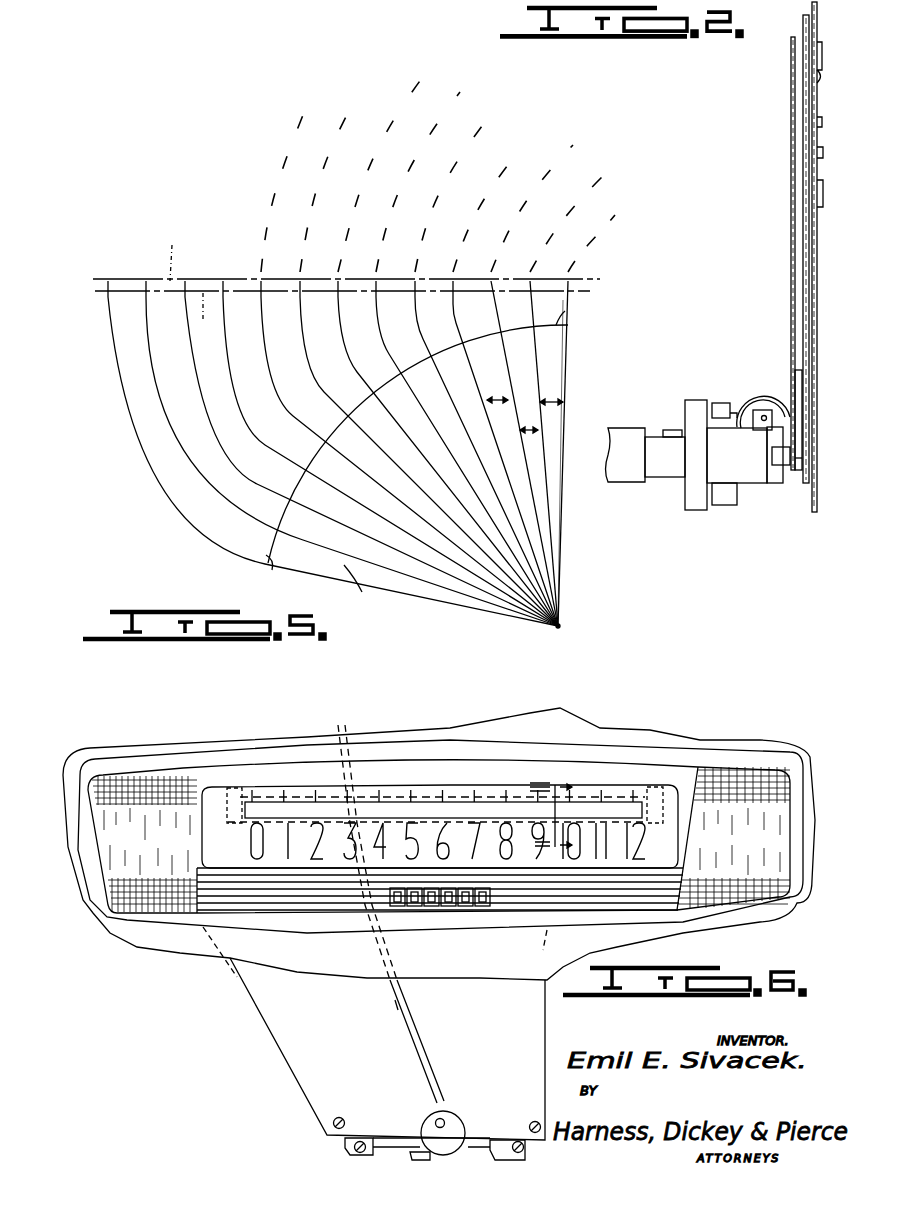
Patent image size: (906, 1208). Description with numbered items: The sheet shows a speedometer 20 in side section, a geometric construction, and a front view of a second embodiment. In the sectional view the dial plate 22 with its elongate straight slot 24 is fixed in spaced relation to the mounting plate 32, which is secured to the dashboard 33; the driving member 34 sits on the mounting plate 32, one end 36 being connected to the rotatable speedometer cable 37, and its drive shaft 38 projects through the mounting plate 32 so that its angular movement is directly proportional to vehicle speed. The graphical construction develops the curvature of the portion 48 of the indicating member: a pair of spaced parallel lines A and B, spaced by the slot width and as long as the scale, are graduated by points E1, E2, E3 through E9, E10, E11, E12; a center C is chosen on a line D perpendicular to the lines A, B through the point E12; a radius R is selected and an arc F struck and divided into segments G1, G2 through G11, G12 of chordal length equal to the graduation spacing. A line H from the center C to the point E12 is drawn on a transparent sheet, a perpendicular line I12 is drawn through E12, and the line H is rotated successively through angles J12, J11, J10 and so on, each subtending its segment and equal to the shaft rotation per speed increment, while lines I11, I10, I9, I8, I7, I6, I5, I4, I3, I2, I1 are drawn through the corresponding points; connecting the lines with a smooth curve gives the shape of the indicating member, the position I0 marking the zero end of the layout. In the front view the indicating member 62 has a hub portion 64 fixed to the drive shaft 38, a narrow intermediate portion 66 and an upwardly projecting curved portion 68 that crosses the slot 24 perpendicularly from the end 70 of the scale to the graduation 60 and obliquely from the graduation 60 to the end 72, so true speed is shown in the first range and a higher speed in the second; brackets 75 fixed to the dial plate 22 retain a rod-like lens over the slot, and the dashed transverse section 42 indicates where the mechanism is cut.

In FIG. 2, the speedometer 20 is at (788, 368).
In FIG. 2, the dial plate 22 is at (822, 152).
In FIG. 6, the dial plate 22 is at (620, 762).
In FIG. 2, the slot 24 is at (818, 120).
In FIG. 6, the slot 24 is at (485, 805).
In FIG. 2, the mounting plate 32 is at (791, 282).
In FIG. 6, the mounting plate 32 is at (528, 1035).
In FIG. 2, the dashboard 33 is at (820, 303).
In FIG. 2, the driving member 34 is at (702, 470).
In FIG. 2, the end of driving member 36 is at (657, 432).
In FIG. 2, the speedometer cable 37 is at (622, 430).
In FIG. 2, the drive shaft 38 is at (802, 473).
In FIG. 6, the drive shaft 38 is at (443, 1127).
In FIG. 2, the mask plate 42 is at (803, 257).
In FIG. 2, the curved portion of indicating member 48 is at (804, 52).
In FIG. 6, the graduation 60 is at (450, 787).
In FIG. 6, the indicating member 62 is at (410, 1043).
In FIG. 6, the hub portion 64 is at (467, 1123).
In FIG. 6, the intermediate portion 66 is at (398, 1007).
In FIG. 6, the curved portion 68 is at (338, 725).
In FIG. 6, the end of scale 70 is at (247, 797).
In FIG. 6, the end of scale 72 is at (650, 790).
In FIG. 6, the brackets 75 is at (233, 827).
In FIG. 5, the center C is at (562, 624).
In FIG. 5, the line D is at (572, 311).
In FIG. 5, the arc F is at (290, 497).
In FIG. 5, the line H is at (566, 496).
In FIG. 5, the radius R is at (357, 586).
In FIG. 5, the line A is at (173, 268).
In FIG. 5, the line B is at (202, 314).
In FIG. 5, the index line I0 is at (106, 278).
In FIG. 5, the line I1 is at (142, 270).
In FIG. 5, the line I2 is at (197, 277).
In FIG. 5, the line I3 is at (232, 278).
In FIG. 5, the line I4 is at (409, 453).
In FIG. 5, the line I5 is at (429, 453).
In FIG. 5, the line I6 is at (448, 453).
In FIG. 5, the line I7 is at (467, 453).
In FIG. 5, the line I8 is at (486, 453).
In FIG. 5, the line I9 is at (465, 280).
In FIG. 5, the line I10 is at (497, 281).
In FIG. 5, the line I11 is at (537, 283).
In FIG. 5, the line I12 is at (571, 284).
In FIG. 5, the point E1 is at (140, 293).
In FIG. 5, the point E2 is at (180, 293).
In FIG. 5, the point E3 is at (221, 293).
In FIG. 5, the point E9 is at (459, 293).
In FIG. 5, the point E10 is at (495, 293).
In FIG. 5, the point E11 is at (532, 293).
In FIG. 5, the point E12 is at (570, 291).
In FIG. 5, the segment G1 is at (272, 570).
In FIG. 5, the segment G2 is at (280, 527).
In FIG. 5, the segment G11 is at (515, 337).
In FIG. 5, the segment G12 is at (568, 330).
In FIG. 5, the angle J10 is at (492, 398).
In FIG. 5, the angle J11 is at (527, 432).
In FIG. 5, the angle J12 is at (553, 398).